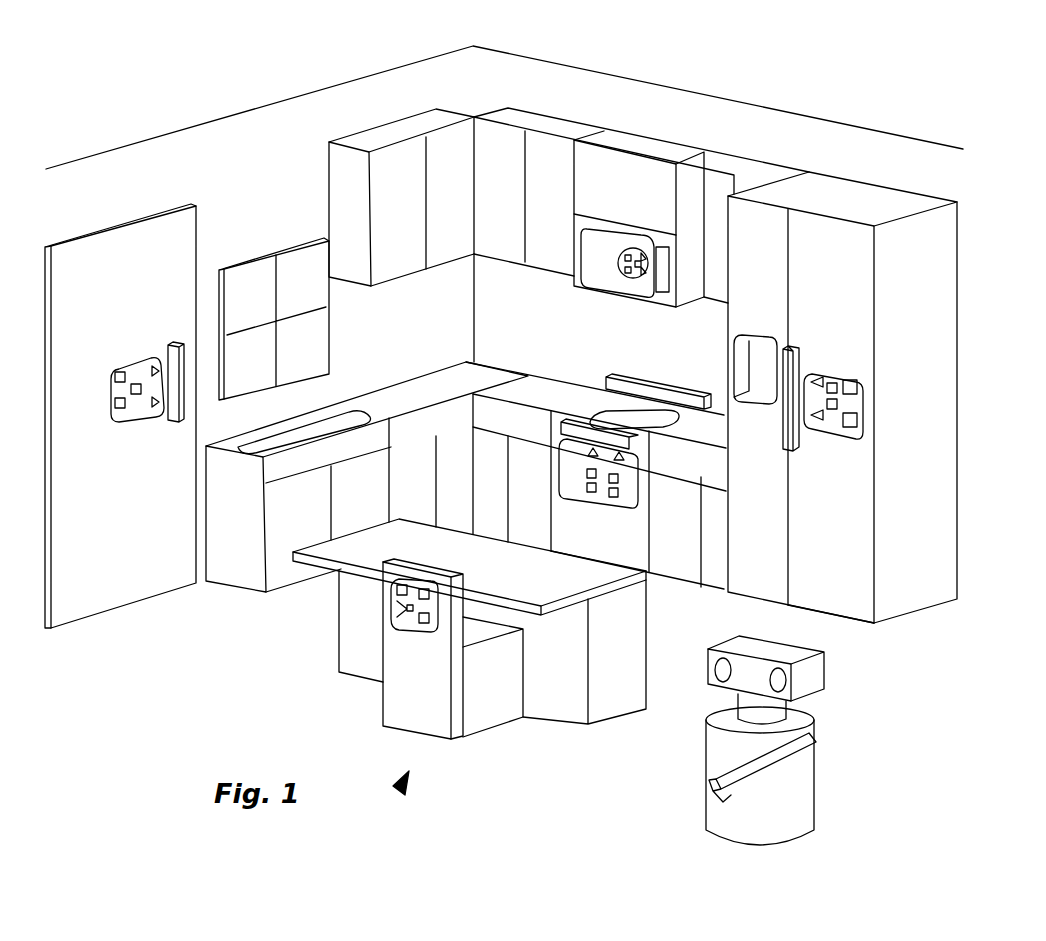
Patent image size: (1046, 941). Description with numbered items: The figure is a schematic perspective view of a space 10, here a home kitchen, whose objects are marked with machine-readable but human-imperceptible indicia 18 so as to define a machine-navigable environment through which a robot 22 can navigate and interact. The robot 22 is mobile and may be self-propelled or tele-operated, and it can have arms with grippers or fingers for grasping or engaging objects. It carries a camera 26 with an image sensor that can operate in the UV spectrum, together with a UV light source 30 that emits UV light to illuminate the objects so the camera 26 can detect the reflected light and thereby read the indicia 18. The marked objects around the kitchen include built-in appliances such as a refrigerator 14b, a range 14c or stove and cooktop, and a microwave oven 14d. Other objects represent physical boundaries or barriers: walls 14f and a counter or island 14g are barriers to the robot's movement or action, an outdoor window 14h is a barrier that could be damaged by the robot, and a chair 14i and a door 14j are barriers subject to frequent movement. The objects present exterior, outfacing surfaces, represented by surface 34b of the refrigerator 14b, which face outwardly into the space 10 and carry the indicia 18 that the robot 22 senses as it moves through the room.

The space 10 is at (398, 795).
The refrigerator 14b is at (817, 195).
The range 14c is at (623, 530).
The microwave oven 14d is at (617, 237).
The wall 14f is at (218, 162).
The counter or island 14g is at (608, 698).
The outdoor window 14h is at (295, 280).
The chair 14i is at (457, 710).
The door 14j is at (83, 555).
The indicia 18 is at (110, 392).
The robot 22 is at (769, 763).
The camera 26 is at (722, 671).
The UV light source 30 is at (777, 681).
The exterior outfacing surface 34b is at (830, 577).